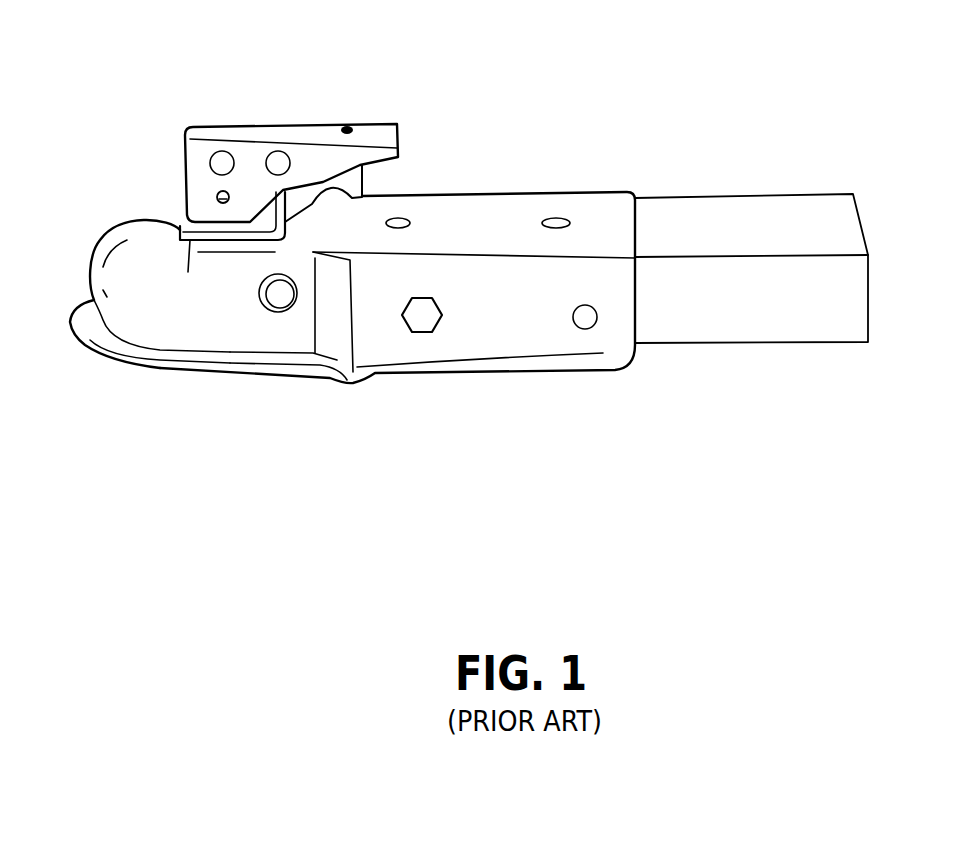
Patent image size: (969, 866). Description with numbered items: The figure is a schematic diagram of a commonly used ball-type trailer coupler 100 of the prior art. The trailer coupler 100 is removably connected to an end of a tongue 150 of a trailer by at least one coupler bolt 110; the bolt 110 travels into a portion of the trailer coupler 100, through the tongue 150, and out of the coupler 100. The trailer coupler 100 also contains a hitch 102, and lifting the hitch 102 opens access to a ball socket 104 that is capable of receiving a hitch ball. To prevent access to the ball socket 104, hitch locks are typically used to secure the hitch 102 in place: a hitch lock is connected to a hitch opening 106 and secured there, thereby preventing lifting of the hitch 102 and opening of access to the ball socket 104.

The trailer coupler 100 is at (433, 180).
The hitch 102 is at (259, 115).
The ball socket 104 is at (207, 392).
The hitch opening 106 is at (196, 196).
The coupler bolt 110 is at (424, 350).
The tongue 150 is at (689, 185).